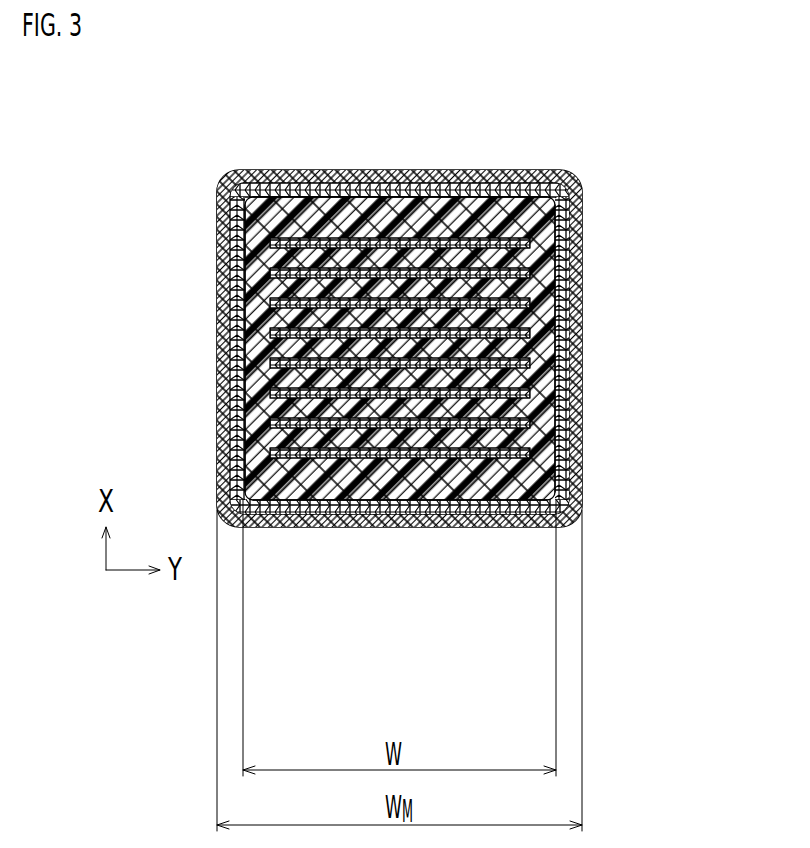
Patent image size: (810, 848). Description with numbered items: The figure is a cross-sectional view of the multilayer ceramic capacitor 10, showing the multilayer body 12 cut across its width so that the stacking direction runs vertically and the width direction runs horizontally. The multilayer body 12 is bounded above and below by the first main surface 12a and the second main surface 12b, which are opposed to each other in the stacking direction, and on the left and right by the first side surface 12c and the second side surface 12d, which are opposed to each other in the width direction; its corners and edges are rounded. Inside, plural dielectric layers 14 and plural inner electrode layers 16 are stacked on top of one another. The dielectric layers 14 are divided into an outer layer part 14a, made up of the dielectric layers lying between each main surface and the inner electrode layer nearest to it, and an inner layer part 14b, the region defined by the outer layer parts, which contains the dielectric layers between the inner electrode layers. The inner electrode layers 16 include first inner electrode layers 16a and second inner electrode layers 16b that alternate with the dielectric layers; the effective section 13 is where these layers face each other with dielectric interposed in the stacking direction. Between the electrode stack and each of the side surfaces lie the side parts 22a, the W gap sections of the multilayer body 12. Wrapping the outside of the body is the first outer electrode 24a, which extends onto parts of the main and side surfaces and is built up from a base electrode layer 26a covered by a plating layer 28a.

The multilayer ceramic capacitor 10 is at (172, 158).
The multilayer body 12 is at (485, 196).
The first main surface 12a is at (302, 196).
The second main surface 12b is at (328, 501).
The first side surface 12c is at (246, 335).
The second side surface 12d is at (556, 350).
The effective section 13 is at (270, 238).
The dielectric layers 14 is at (427, 353).
The outer layer part 14a is at (357, 226).
The inner layer part 14b is at (440, 317).
The inner electrode layers 16 is at (456, 386).
The first inner electrode layers 16a is at (275, 303).
The second inner electrode layers 16b is at (525, 333).
The side parts 22a is at (270, 240).
The first outer electrode 24a is at (481, 348).
The base electrode layer 26a is at (575, 231).
The plating layer 28a is at (563, 258).